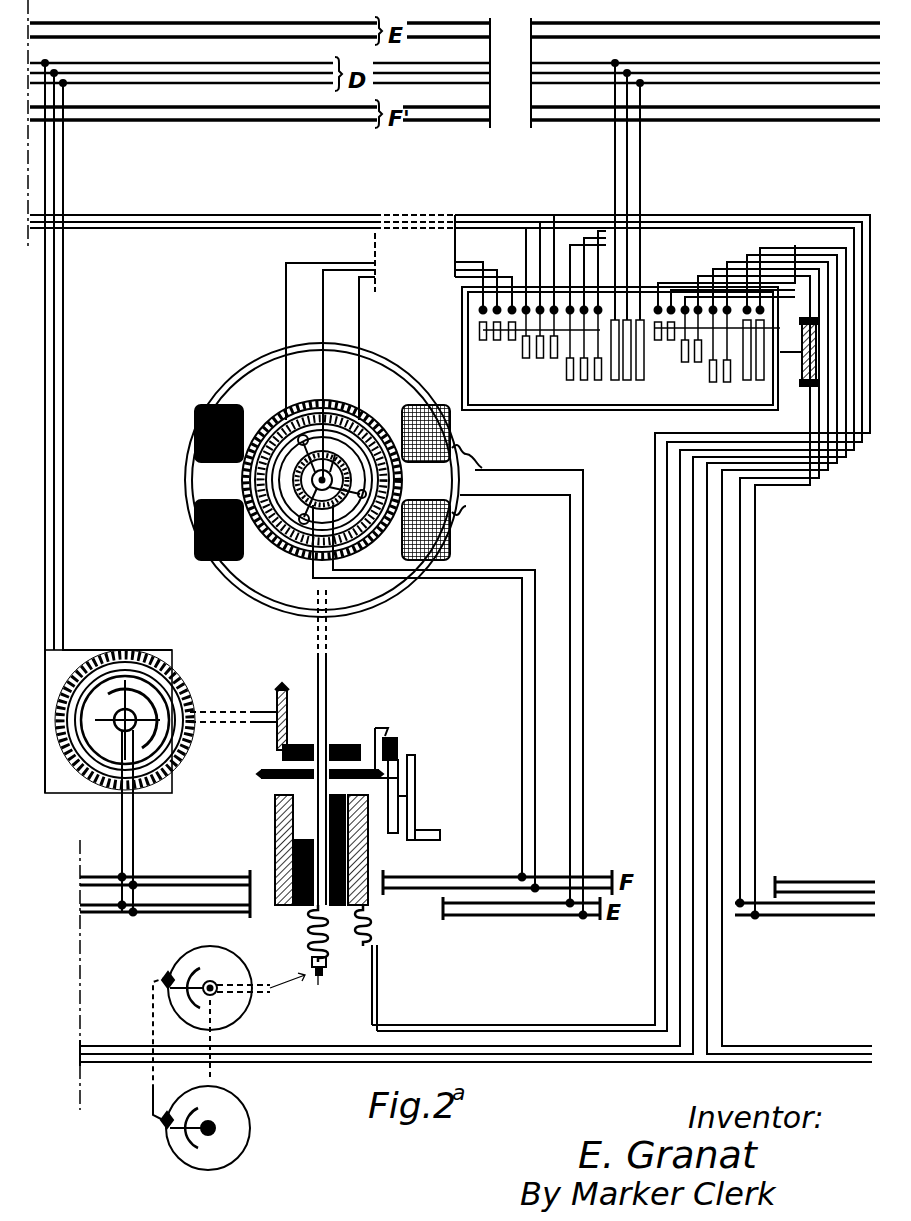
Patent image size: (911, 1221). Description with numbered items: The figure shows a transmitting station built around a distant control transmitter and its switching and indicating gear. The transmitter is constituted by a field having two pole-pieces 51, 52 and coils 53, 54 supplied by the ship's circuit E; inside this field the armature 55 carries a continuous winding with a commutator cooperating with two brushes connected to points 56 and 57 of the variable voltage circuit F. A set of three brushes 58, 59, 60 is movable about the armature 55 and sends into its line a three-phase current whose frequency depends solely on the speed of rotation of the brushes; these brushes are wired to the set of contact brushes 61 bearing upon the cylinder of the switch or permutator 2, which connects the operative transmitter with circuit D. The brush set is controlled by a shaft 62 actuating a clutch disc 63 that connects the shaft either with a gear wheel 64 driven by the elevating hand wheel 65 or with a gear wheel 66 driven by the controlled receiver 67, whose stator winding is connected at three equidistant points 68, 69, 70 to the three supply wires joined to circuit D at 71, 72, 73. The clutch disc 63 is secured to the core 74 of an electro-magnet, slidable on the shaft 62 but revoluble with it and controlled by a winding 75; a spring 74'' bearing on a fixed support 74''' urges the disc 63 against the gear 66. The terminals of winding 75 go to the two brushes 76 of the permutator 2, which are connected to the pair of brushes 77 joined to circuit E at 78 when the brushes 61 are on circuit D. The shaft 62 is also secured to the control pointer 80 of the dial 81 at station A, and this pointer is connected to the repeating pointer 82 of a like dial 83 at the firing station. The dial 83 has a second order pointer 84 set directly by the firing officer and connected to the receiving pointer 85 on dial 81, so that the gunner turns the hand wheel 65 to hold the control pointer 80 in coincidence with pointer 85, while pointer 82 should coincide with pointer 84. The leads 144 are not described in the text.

The switch or permutator 2 is at (618, 371).
The pole-piece 51 is at (288, 493).
The pole-piece 52 is at (460, 460).
The coil 53 is at (175, 380).
The coil 54 is at (435, 415).
The armature 55 is at (165, 550).
The point of the variable voltage circuit 56 is at (505, 842).
The point of the variable voltage circuit 57 is at (510, 932).
The brush 58 is at (323, 450).
The brush 59 is at (278, 575).
The brush 60 is at (358, 500).
The contact brushes 61 is at (445, 346).
The shaft 62 is at (330, 665).
The clutch disc 63 is at (240, 750).
The gear wheel 64 is at (340, 745).
The elevating hand wheel 65 is at (432, 835).
The gear wheel 66 is at (300, 735).
The controlled receiver 67 is at (95, 745).
The connection point of the stator winding 68 is at (131, 726).
The connection point of the stator winding 69 is at (175, 672).
The connection point of the stator winding 70 is at (160, 760).
The connection to circuit D 71 is at (30, 100).
The connection to circuit D 72 is at (30, 150).
The connection to circuit D 73 is at (60, 100).
The core of the electro-magnet 74 is at (298, 940).
The spring 74'' is at (362, 968).
The fixed support 74''' is at (338, 995).
The electro-magnet winding 75 is at (250, 850).
The brushes of the general permutator 76 is at (600, 437).
The pair of brushes 77 is at (760, 312).
The connection to circuit E 78 is at (805, 910).
The control pointer 80 is at (215, 980).
The dial 81 is at (236, 1012).
The repeating pointer 82 is at (210, 1122).
The dial 83 is at (229, 1128).
The order pointer 84 is at (130, 1152).
The receiving pointer 85 is at (130, 952).
The leads 144 is at (635, 180).